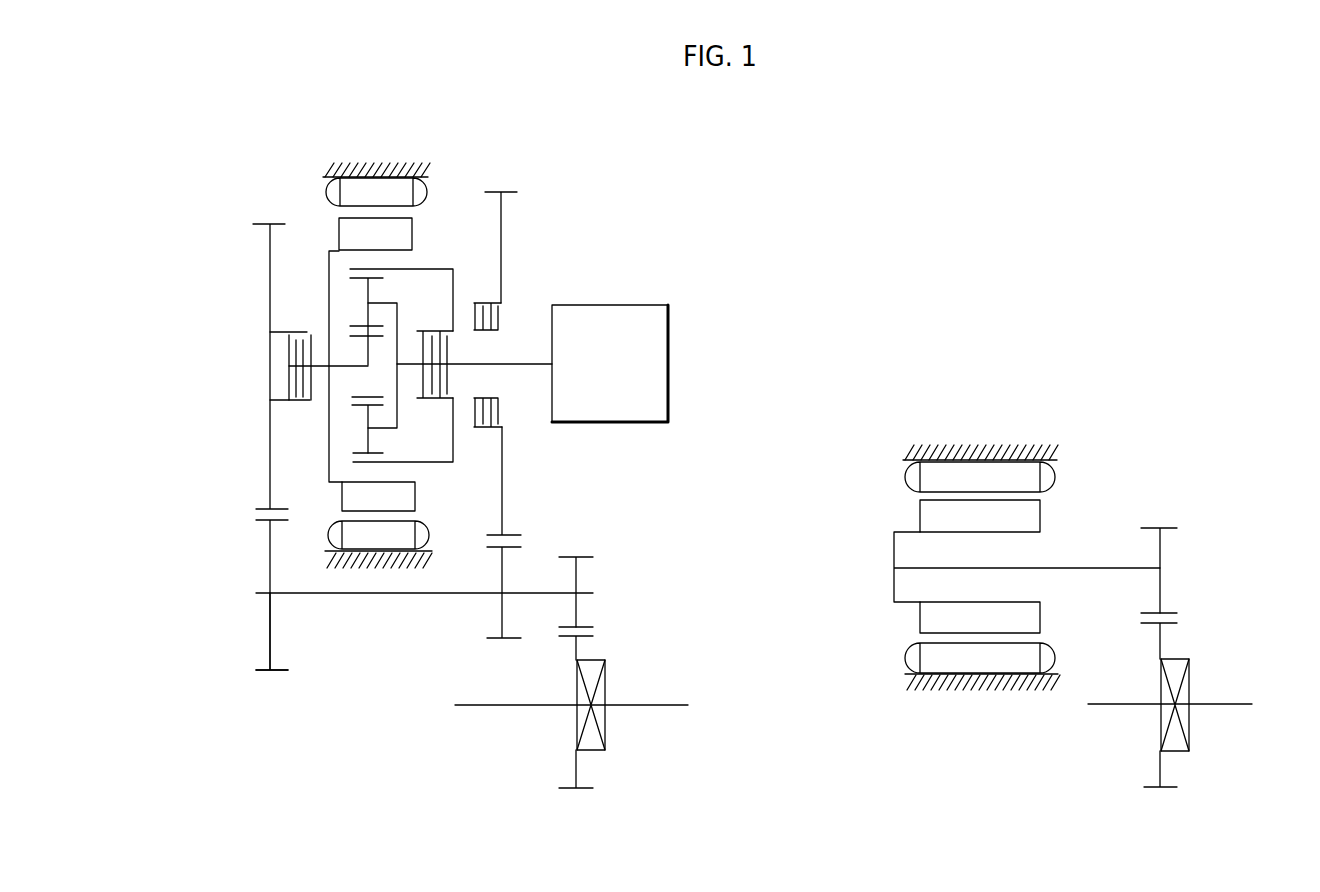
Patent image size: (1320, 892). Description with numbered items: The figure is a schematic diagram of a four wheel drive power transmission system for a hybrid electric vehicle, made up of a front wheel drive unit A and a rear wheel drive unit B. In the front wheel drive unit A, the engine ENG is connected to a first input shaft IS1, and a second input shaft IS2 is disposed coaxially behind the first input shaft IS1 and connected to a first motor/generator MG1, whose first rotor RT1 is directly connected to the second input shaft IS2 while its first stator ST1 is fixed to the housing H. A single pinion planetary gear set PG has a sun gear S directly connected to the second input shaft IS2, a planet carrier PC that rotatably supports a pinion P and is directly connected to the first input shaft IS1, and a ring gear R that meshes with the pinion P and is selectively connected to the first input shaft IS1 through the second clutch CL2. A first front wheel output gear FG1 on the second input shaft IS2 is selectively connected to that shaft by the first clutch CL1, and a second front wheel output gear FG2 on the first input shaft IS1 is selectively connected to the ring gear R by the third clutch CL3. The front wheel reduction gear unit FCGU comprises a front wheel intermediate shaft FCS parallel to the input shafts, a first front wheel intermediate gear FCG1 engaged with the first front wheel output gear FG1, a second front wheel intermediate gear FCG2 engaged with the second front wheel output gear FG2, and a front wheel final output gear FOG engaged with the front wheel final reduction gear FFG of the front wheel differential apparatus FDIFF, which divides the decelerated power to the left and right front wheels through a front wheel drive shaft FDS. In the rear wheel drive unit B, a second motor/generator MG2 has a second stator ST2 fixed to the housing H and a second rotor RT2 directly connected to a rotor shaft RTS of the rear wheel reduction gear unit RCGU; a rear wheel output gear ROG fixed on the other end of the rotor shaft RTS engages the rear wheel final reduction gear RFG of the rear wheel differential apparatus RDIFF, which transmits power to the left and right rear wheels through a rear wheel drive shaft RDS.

The front wheel drive unit A is at (638, 213).
The rear wheel drive unit B is at (1182, 409).
The housing H is at (365, 162).
The first motor/generator MG1 is at (189, 125).
The first stator ST1 is at (330, 190).
The first rotor RT1 is at (340, 228).
The first front wheel output gear FG1 is at (270, 231).
The planetary gear set PG is at (205, 248).
The ring gear R is at (352, 268).
The pinion P is at (368, 288).
The planet carrier PC is at (375, 306).
The sun gear S is at (363, 350).
The second input shaft IS2 is at (327, 365).
The first clutch CL1 is at (276, 378).
The second clutch CL2 is at (432, 306).
The third clutch CL3 is at (517, 297).
The second front wheel output gear FG2 is at (503, 204).
The engine ENG is at (610, 363).
The first input shaft IS1 is at (523, 368).
The first front wheel intermediate gear FCG1 is at (270, 643).
The second front wheel intermediate gear FCG2 is at (500, 622).
The front wheel intermediate shaft FCS is at (355, 597).
The front wheel reduction gear unit FCGU is at (533, 561).
The front wheel final output gear FOG is at (578, 570).
The front wheel final reduction gear FFG is at (578, 643).
The front wheel differential apparatus FDIFF is at (607, 725).
The front wheel drive shaft FDS is at (500, 708).
The second motor/generator MG2 is at (806, 440).
The second stator ST2 is at (910, 476).
The second rotor RT2 is at (920, 516).
The rotor shaft RTS is at (913, 568).
The rear wheel reduction gear unit RCGU is at (1082, 533).
The rear wheel output gear ROG is at (1161, 543).
The rear wheel final reduction gear RFG is at (1161, 633).
The rear wheel differential apparatus RDIFF is at (1190, 738).
The rear wheel drive shaft RDS is at (1105, 708).